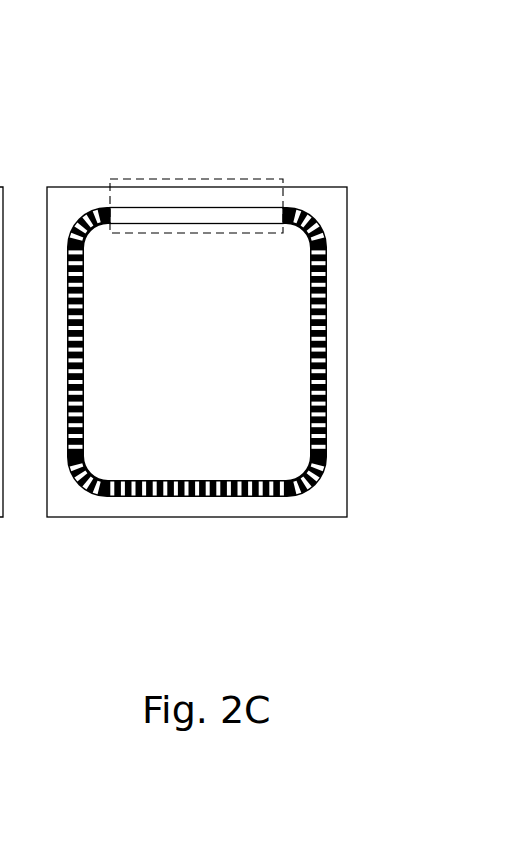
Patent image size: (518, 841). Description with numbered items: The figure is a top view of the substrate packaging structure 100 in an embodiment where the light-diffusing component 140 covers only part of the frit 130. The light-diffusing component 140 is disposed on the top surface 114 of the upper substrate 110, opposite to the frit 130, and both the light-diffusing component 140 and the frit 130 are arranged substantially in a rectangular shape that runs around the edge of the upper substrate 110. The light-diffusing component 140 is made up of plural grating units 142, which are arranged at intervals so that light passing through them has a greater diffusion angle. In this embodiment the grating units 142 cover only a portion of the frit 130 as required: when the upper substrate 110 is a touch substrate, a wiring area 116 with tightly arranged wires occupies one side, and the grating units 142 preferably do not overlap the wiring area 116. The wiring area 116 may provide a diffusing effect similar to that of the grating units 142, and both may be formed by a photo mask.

The substrate packaging structure 100 is at (254, 296).
The upper substrate 110 is at (347, 272).
The top surface 114 is at (216, 362).
The wiring area 116 is at (157, 178).
The frit 130 is at (236, 206).
The light-diffusing component 140 is at (435, 297).
The grating units 142 is at (329, 272).